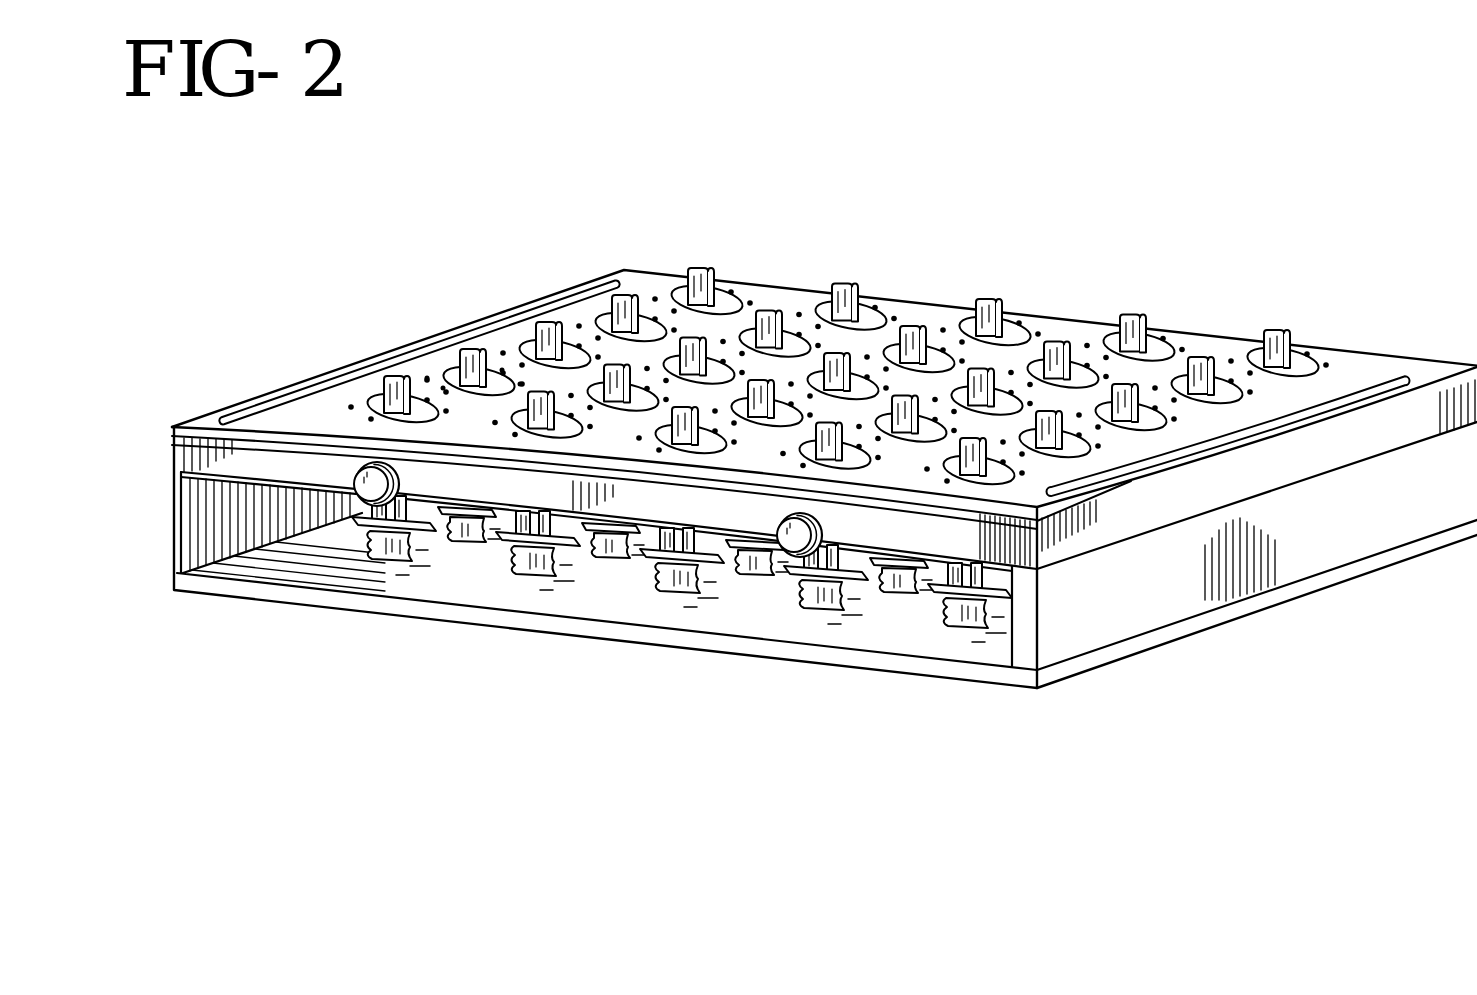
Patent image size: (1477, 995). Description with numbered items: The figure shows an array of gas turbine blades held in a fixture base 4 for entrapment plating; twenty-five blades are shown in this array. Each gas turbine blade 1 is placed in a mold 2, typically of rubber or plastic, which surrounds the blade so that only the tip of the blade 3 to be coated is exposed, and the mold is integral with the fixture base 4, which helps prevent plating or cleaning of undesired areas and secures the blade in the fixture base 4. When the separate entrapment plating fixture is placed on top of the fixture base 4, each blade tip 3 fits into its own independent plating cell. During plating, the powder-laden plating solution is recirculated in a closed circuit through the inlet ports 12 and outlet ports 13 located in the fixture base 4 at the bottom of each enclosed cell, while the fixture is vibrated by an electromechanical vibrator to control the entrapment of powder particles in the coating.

The gas turbine blade 1 is at (407, 560).
The mold 2 is at (380, 392).
The tip of the blade 3 is at (840, 287).
The fixture base 4 is at (1352, 375).
The inlet ports 12 is at (427, 378).
The outlet ports 13 is at (443, 388).